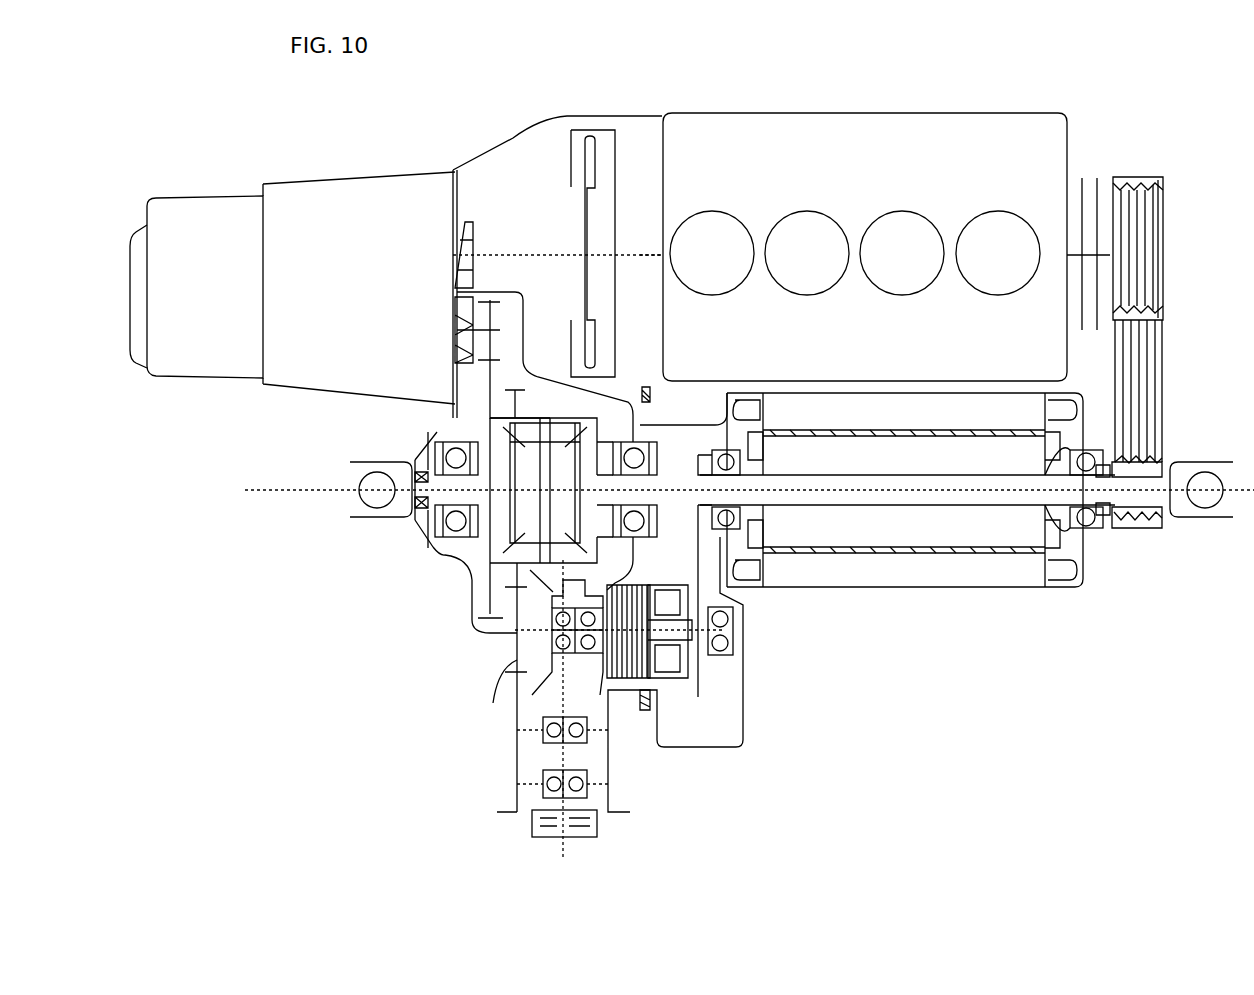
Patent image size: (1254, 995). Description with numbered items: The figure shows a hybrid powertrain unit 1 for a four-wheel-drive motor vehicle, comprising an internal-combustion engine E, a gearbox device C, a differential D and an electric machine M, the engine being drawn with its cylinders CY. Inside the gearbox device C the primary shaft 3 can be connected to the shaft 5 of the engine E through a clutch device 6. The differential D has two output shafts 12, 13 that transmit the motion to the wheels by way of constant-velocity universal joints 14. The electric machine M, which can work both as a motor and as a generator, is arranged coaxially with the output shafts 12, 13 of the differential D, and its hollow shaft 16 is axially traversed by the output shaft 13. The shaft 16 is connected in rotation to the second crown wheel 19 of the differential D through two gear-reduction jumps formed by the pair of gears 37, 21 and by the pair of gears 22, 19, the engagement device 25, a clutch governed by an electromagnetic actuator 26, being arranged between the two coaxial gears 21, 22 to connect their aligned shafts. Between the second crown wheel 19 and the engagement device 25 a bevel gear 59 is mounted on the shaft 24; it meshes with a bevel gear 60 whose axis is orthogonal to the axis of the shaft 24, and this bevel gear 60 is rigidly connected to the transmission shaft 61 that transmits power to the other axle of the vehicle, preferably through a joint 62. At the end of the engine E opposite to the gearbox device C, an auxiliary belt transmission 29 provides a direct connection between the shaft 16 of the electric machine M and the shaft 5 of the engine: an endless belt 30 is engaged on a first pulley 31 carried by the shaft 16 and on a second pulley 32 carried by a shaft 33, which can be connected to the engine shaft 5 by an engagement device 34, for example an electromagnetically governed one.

The hybrid powertrain unit 1 is at (240, 116).
The primary shaft 3 is at (524, 250).
The shaft of the engine 5 is at (640, 250).
The clutch device 6 is at (620, 152).
The output shaft 12 is at (430, 507).
The output shaft 13 is at (882, 482).
The constant-velocity universal joints 14 is at (378, 482).
The shaft of the electric machine 16 is at (962, 510).
The second crown wheel 19 is at (512, 578).
The gear 21 is at (700, 697).
The gear 22 is at (532, 637).
The shaft 24 is at (555, 670).
The engagement device 25 is at (630, 684).
The electromagnetic actuator 26 is at (667, 658).
The auxiliary belt transmission 29 is at (1178, 383).
The endless belt 30 is at (1150, 350).
The first pulley 31 is at (1135, 530).
The second pulley 32 is at (1156, 215).
The shaft 33 is at (1075, 257).
The engagement device 34 is at (1092, 170).
The gear 37 is at (700, 468).
The bevel gear 59 is at (540, 613).
The bevel gear 60 is at (555, 680).
The transmission shaft 61 is at (567, 755).
The joint 62 is at (543, 828).
The gearbox device C is at (127, 262).
The cylinder CY is at (972, 214).
The differential D is at (445, 574).
The internal-combustion engine E is at (1068, 143).
The electric machine M is at (907, 592).